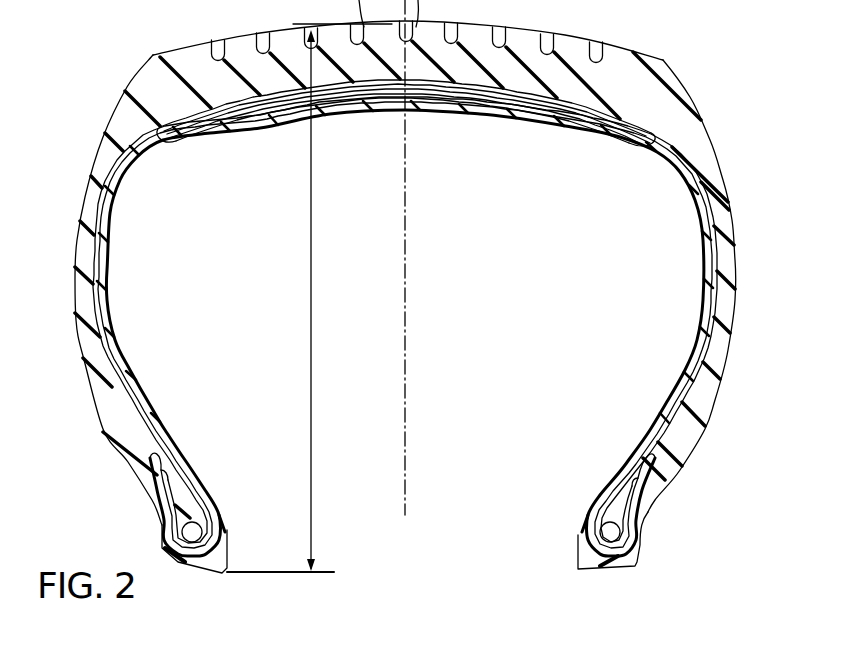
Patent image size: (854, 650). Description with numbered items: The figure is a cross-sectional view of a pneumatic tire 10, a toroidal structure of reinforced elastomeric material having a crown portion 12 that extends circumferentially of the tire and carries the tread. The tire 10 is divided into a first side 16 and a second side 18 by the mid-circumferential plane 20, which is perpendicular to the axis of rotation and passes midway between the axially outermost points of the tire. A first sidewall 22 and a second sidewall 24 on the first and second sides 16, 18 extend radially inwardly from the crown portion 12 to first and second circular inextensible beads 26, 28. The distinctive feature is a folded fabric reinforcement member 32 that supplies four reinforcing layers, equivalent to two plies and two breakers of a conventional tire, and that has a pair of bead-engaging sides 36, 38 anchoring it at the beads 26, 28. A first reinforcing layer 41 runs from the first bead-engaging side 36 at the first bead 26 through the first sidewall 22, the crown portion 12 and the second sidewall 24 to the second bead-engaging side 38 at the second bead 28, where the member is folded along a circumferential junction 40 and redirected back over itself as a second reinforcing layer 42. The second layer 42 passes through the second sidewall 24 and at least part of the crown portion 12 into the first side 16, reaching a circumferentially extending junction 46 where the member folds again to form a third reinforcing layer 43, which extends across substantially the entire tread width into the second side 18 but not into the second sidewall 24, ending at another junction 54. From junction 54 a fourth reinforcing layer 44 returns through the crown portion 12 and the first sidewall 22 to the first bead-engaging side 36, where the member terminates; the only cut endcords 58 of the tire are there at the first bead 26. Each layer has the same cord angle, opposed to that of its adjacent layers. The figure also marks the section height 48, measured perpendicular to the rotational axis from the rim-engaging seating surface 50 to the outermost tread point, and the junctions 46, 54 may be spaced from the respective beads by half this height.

The tire 10 is at (725, 107).
The crown portion 12 is at (462, 59).
The first side 16 is at (734, 296).
The second side 18 is at (78, 246).
The mid-circumferential plane 20 is at (407, 228).
The first sidewall 22 is at (723, 369).
The second sidewall 24 is at (75, 321).
The first bead 26 is at (603, 532).
The second bead 28 is at (198, 532).
The folded fabric reinforcement member 32 is at (277, 83).
The first bead-engaging side 36 is at (648, 476).
The second bead-engaging side 38 is at (153, 475).
The junction 40 is at (148, 459).
The first reinforcing layer 41 is at (517, 107).
The second reinforcing layer 42 is at (557, 110).
The third reinforcing layer 43 is at (442, 90).
The fourth reinforcing layer 44 is at (336, 86).
The junction 46 is at (654, 136).
The section height 48 is at (311, 317).
The seating surface 50 is at (200, 571).
The junction 54 is at (157, 127).
The cut endcords 58 is at (660, 452).